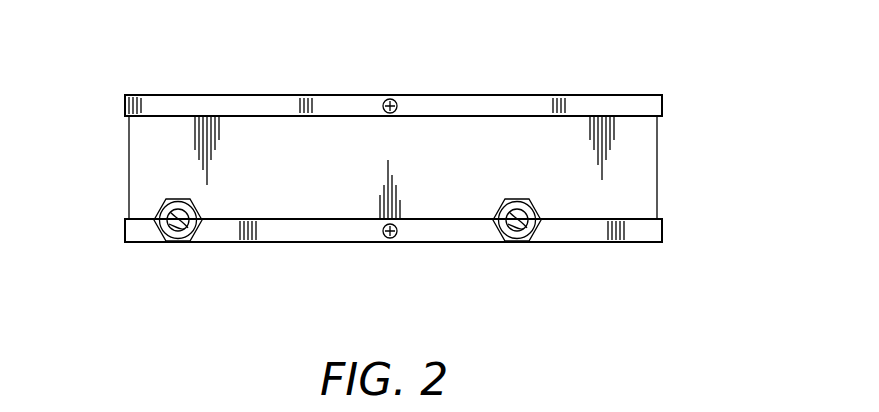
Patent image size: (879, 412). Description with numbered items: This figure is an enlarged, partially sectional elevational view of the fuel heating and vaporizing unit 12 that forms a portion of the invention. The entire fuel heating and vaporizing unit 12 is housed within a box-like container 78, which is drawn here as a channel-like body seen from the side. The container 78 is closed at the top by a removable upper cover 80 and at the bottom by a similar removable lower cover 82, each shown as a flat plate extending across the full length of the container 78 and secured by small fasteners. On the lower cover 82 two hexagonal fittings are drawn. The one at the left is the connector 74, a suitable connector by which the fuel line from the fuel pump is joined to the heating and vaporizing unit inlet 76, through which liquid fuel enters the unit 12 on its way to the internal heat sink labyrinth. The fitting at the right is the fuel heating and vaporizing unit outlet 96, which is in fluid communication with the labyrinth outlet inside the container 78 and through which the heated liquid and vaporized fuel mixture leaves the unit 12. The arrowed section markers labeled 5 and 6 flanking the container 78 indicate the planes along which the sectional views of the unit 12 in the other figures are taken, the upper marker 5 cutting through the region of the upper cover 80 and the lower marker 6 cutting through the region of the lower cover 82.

The fuel heating and vaporizing unit 12 is at (364, 78).
The removable upper cover 80 is at (491, 104).
The removable lower cover 82 is at (600, 243).
The box-like container 78 is at (657, 178).
The connector 74 is at (200, 242).
The heating and vaporizing unit inlet 76 is at (178, 242).
The fuel heating and vaporizing unit outlet 96 is at (525, 241).
The section line 5- 5 is at (120, 118).
The section line 6- 6 is at (118, 219).